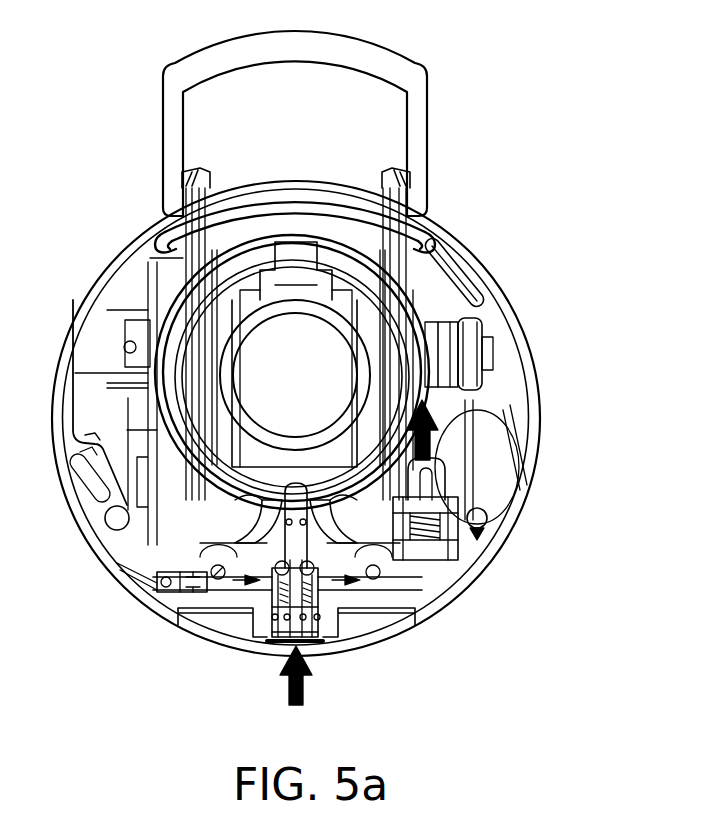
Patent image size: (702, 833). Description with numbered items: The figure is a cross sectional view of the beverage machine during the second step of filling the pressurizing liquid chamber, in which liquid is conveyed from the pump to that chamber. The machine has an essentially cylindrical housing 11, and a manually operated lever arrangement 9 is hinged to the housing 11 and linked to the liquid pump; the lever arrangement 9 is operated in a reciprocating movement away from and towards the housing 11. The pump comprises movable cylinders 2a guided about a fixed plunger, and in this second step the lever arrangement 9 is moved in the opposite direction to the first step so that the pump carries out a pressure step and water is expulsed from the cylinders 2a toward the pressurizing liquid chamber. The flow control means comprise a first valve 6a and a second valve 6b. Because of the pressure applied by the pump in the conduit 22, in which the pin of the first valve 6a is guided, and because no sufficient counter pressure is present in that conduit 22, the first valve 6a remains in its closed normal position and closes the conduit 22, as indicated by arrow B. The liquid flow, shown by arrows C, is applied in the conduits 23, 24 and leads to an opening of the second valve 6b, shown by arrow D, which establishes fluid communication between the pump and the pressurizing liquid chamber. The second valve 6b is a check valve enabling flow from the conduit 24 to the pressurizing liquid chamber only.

The lever arrangement 9 is at (396, 50).
The housing 11 is at (512, 307).
The movable cylinder 2a is at (200, 548).
The conduit 22 is at (182, 600).
The conduit 23 is at (222, 615).
The conduit 24 is at (386, 614).
The first valve 6a is at (292, 638).
The second valve 6b is at (433, 560).
The arrow B is at (303, 690).
The arrows C is at (250, 590).
The arrow D is at (510, 530).